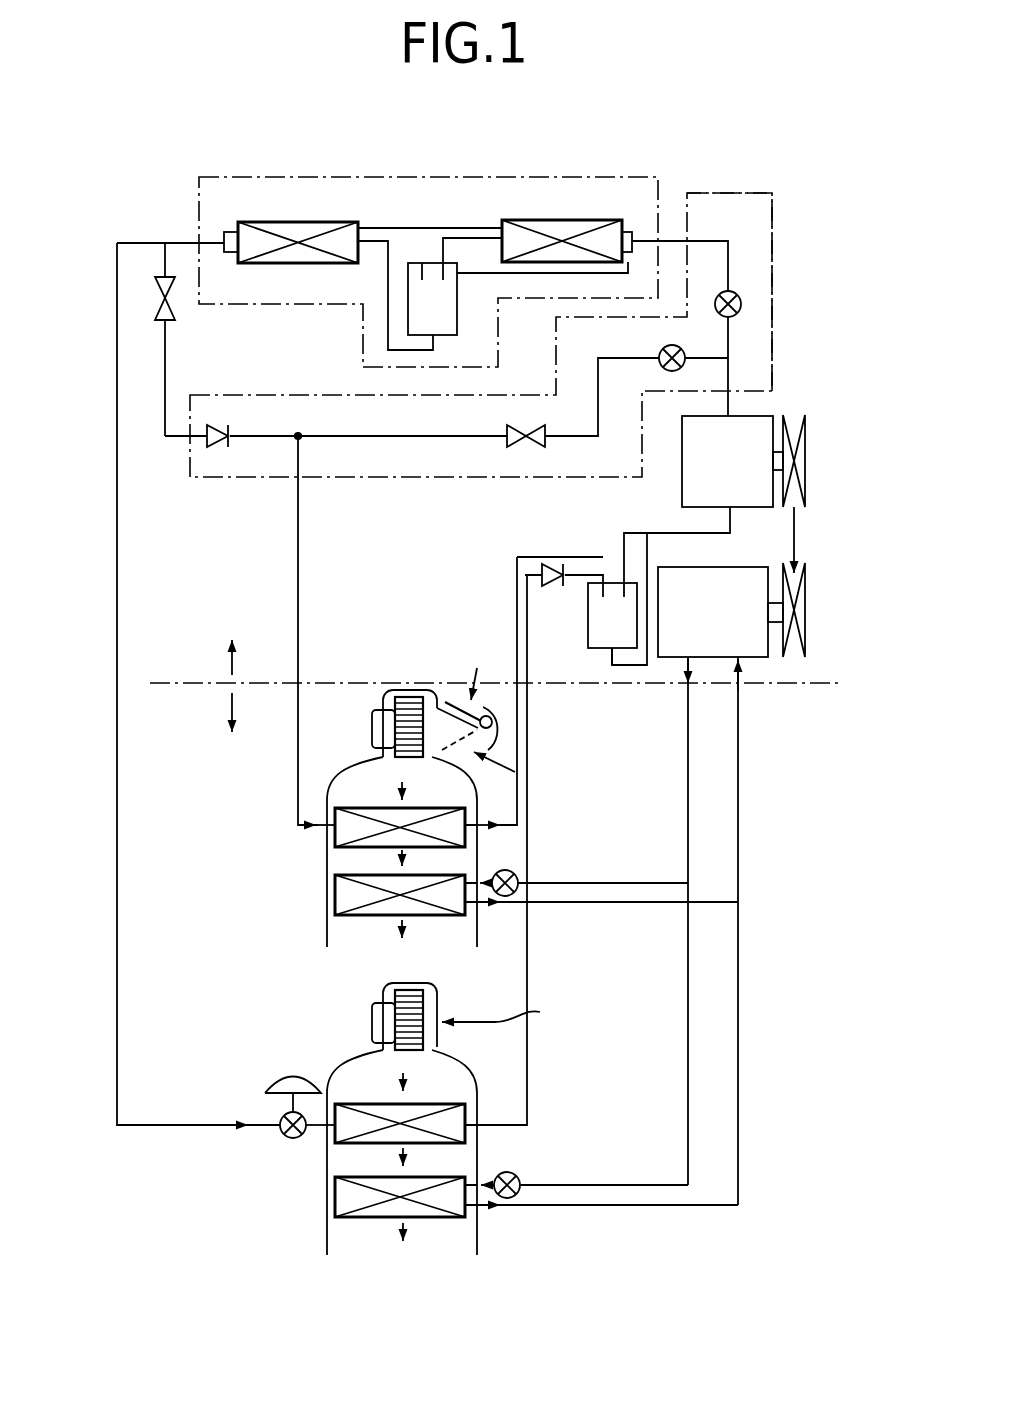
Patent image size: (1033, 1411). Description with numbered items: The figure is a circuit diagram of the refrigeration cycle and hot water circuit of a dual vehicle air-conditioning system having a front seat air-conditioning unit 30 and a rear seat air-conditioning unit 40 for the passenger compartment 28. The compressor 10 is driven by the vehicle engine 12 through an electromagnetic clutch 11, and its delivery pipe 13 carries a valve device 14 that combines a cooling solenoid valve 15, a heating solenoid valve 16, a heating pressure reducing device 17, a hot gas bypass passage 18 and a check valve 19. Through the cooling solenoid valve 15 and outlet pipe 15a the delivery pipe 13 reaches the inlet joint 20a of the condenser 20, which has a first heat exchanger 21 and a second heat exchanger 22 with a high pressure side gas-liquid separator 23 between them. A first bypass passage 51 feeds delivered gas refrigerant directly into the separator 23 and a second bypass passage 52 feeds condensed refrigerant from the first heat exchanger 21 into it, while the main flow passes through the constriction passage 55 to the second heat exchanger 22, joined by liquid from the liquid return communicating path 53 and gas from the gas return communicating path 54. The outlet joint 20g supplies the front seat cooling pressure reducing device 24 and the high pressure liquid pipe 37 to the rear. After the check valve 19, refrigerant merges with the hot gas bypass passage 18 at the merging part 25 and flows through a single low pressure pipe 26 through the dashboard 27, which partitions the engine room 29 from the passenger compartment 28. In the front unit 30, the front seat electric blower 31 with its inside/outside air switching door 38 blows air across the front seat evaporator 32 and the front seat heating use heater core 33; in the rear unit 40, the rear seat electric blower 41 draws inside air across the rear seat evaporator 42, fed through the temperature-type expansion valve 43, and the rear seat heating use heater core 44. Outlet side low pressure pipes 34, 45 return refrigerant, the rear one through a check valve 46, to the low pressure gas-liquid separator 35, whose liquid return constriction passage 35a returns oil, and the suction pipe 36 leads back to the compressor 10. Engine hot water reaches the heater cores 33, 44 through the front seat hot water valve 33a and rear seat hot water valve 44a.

The compressor 10 is at (756, 409).
The electromagnetic clutch 11 is at (805, 475).
The vehicle engine 12 is at (740, 567).
The delivery pipe 13 is at (733, 398).
The valve device 14 is at (783, 232).
The cooling solenoid valve 15 is at (741, 303).
The outlet pipe 15a is at (728, 270).
The heating solenoid valve 16 is at (682, 352).
The heating pressure reducing device 17 is at (533, 447).
The hot gas bypass passage 18 is at (455, 437).
The check valve 19 is at (215, 447).
The condenser 20 is at (591, 165).
The inlet joint 20a is at (630, 220).
The outlet joint 20g is at (228, 232).
The first heat exchanger 21 is at (560, 220).
The second heat exchanger 22 is at (300, 222).
The high pressure side gas-liquid separator 23 is at (461, 303).
The front seat cooling pressure reducing device 24 is at (157, 287).
The merging part 25 is at (300, 440).
The low pressure pipe 26 is at (298, 530).
The dashboard 27 is at (182, 685).
The passenger compartment 28 is at (217, 784).
The engine room 29 is at (233, 603).
The front seat air-conditioning unit 30 is at (316, 866).
The front seat electric blower 31 is at (397, 727).
The front seat evaporator 32 is at (343, 830).
The front seat heating use heater core 33 is at (343, 895).
The front seat hot water valve 33a is at (516, 871).
The outlet side low pressure pipe 34 is at (528, 793).
The low pressure gas-liquid separator 35 is at (587, 610).
The liquid return constriction passage 35a is at (612, 658).
The suction pipe 36 is at (675, 532).
The high pressure liquid pipe 37 is at (117, 503).
The inside/outside air switching door 38 is at (452, 700).
The rear seat air-conditioning unit 40 is at (316, 1178).
The rear seat electric blower 41 is at (423, 1035).
The rear seat evaporator 42 is at (343, 1132).
The temperature-type expansion valve 43 is at (282, 1119).
The rear seat heating use heater core 44 is at (343, 1198).
The rear seat hot water valve 44a is at (517, 1173).
The outlet side low pressure pipe 45 is at (529, 953).
The check valve 46 is at (551, 562).
The first bypass passage 51 is at (482, 227).
The second bypass passage 52 is at (445, 277).
The liquid return communicating path 53 is at (389, 277).
The gas return communicating path 54 is at (422, 277).
The constriction passage 55 is at (380, 226).